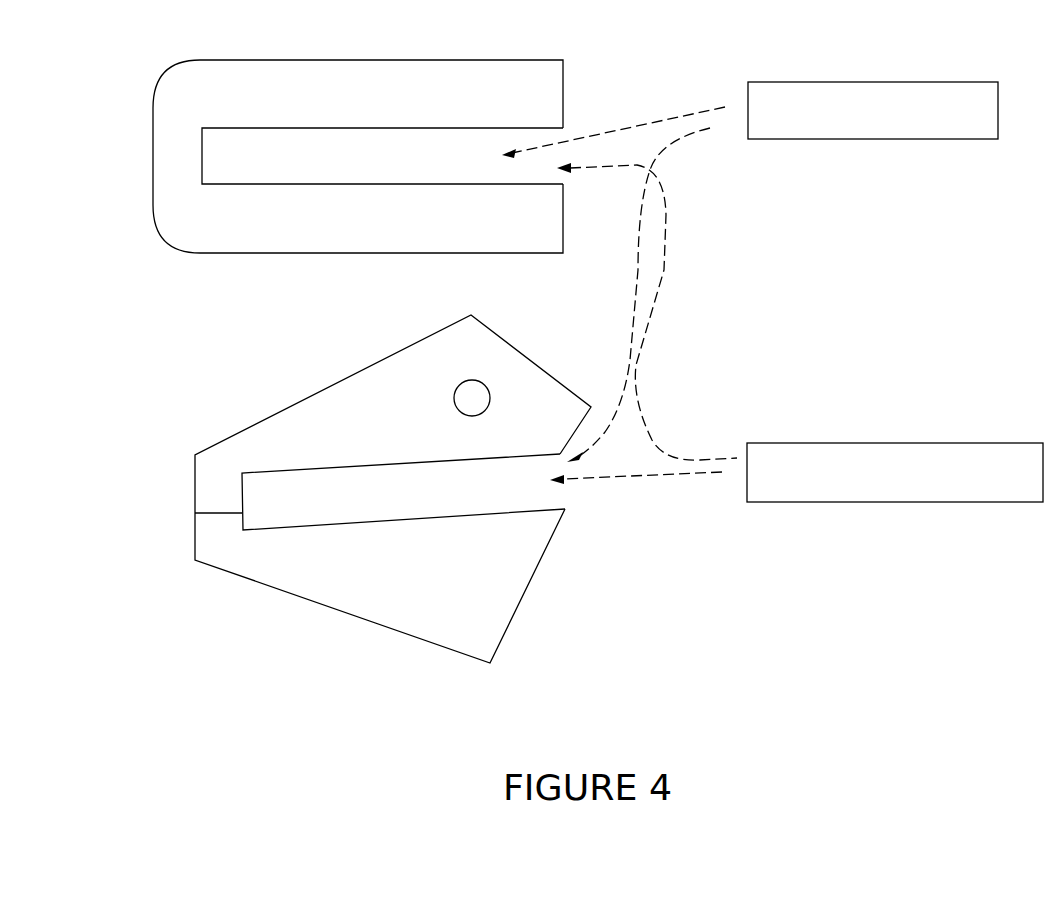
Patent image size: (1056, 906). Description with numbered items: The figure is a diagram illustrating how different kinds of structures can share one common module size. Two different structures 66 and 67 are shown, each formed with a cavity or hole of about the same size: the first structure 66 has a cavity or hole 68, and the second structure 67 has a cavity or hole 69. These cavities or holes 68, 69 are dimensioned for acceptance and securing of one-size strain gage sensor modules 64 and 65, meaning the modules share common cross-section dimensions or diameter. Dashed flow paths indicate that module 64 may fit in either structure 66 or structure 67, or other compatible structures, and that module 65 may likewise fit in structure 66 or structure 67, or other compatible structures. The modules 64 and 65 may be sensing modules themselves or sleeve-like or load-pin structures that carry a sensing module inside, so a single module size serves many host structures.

The strain gage sensor module 64 is at (873, 82).
The strain gage sensor module 65 is at (895, 443).
The structure 66 is at (385, 60).
The structure 67 is at (330, 382).
The cavity or hole 68 is at (372, 170).
The cavity or hole 69 is at (390, 507).